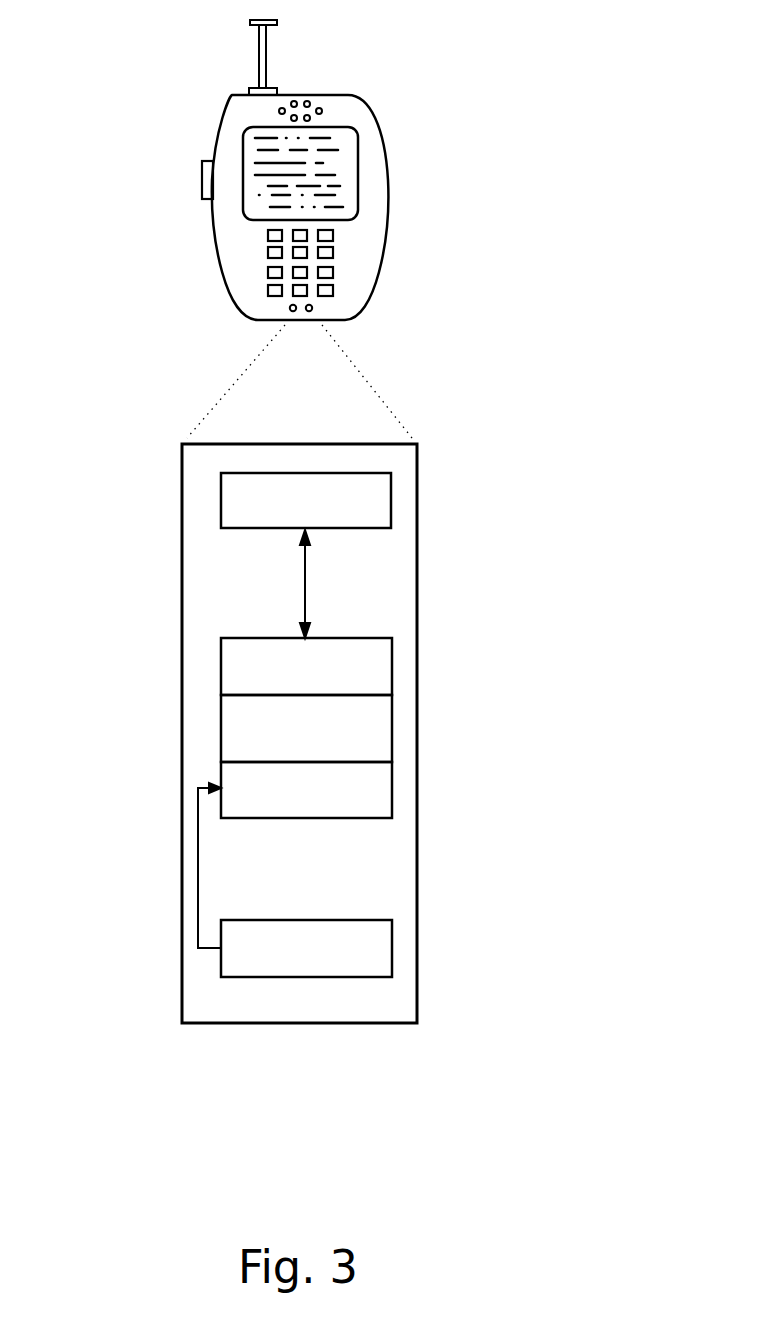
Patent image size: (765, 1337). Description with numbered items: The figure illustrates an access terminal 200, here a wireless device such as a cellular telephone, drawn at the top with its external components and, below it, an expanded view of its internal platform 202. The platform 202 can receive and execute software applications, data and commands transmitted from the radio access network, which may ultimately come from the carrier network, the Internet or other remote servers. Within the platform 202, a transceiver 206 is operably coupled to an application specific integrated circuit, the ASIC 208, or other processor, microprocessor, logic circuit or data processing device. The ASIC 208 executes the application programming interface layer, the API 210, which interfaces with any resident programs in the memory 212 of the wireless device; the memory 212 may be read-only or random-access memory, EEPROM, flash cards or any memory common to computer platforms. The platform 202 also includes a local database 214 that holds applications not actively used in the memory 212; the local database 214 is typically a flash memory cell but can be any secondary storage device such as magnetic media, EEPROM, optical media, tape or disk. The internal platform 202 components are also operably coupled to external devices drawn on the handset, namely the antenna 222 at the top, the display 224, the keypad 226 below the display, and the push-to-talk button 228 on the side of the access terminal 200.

The access terminal 200 is at (365, 297).
The platform 202 is at (182, 641).
The transceiver 206 is at (391, 500).
The application specific integrated circuit 208 is at (392, 675).
The application programming interface 210 is at (392, 723).
The memory 212 is at (392, 788).
The local database 214 is at (392, 930).
The antenna 222 is at (268, 33).
The display 224 is at (358, 160).
The keypad 226 is at (333, 253).
The push-to-talk button 228 is at (202, 171).